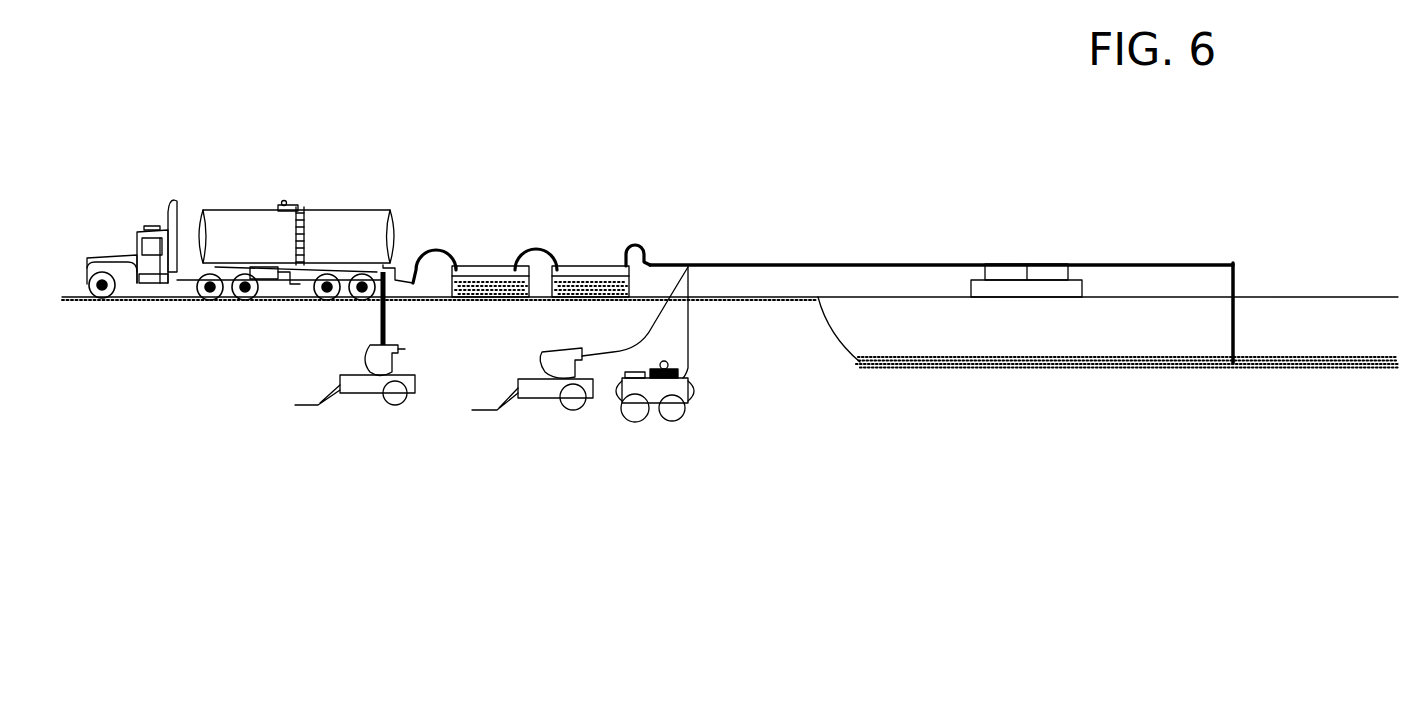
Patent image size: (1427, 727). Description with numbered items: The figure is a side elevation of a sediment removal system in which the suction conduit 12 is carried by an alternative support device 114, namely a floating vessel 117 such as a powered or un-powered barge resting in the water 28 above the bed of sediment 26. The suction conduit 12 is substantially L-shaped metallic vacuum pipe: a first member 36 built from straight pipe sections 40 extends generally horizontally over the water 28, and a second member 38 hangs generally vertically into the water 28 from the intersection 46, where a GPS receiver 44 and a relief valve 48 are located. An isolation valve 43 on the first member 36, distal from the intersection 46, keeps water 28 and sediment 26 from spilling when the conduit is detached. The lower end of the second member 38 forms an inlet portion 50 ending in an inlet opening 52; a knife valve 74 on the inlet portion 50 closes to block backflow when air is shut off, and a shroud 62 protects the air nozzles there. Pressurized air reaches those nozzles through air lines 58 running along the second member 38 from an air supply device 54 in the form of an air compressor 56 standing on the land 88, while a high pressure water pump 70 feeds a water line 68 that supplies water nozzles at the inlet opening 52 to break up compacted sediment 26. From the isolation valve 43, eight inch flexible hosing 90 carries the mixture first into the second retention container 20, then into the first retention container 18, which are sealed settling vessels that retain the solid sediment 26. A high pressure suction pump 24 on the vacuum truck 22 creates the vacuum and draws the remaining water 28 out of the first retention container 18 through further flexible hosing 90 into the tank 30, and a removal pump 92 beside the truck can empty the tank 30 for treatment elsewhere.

The suction conduit 12 is at (991, 302).
The first sediment retention container 18 is at (440, 303).
The second sediment retention container 20 is at (546, 300).
The vacuum truck 22 is at (250, 232).
The high pressure suction pump 24 is at (408, 260).
The sediment 26 is at (1150, 368).
The water 28 is at (1340, 318).
The tank 30 is at (337, 233).
The first member 36 is at (1070, 262).
The second member 38 is at (1240, 283).
The straight pipe sections 40 is at (928, 265).
The isolation valve 43 is at (653, 262).
The GPS receiver 44 is at (1235, 264).
The intersection 46 is at (1237, 265).
The relief valve 48 is at (1238, 268).
The inlet portion 50 is at (1232, 345).
The inlet opening 52 is at (1232, 366).
The air supply device 54 is at (705, 403).
The air compressor 56 is at (688, 375).
The air lines 58 is at (688, 318).
The shroud 62 is at (1230, 362).
The water line 68 is at (608, 355).
The high pressure water pump 70 is at (532, 397).
The knife valve 74 is at (1238, 345).
The land 88 is at (813, 330).
The flexible hosing 90 is at (453, 264).
The removal pump 92 is at (358, 387).
The alternative support device 114 is at (991, 308).
The floating vessel 117 is at (1015, 295).